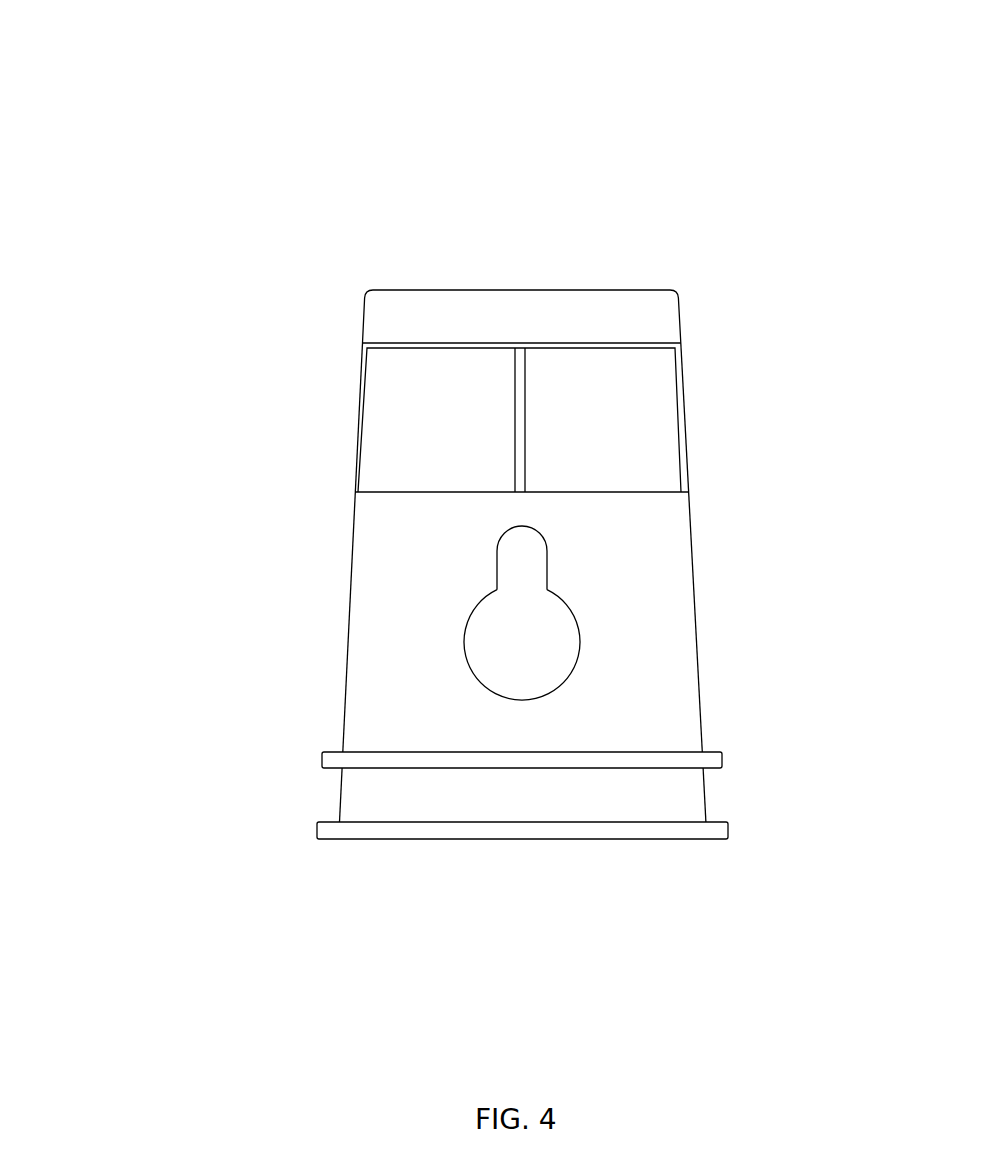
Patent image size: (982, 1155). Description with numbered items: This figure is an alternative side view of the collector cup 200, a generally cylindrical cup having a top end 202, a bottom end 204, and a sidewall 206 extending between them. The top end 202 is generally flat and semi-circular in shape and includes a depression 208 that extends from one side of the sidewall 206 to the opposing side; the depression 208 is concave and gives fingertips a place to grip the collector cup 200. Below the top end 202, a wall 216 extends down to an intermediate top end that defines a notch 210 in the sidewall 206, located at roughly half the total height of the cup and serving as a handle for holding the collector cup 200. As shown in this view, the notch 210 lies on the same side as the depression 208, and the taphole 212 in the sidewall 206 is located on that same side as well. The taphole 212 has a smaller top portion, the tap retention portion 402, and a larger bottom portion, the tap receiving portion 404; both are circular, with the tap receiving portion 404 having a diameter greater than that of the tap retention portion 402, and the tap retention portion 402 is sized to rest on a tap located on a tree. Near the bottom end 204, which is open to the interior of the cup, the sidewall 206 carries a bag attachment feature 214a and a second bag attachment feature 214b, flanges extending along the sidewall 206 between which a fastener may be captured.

The collector cup 200 is at (130, 52).
The top end 202 is at (403, 298).
The bottom end 204 is at (443, 837).
The sidewall 206 is at (415, 611).
The depression 208 is at (558, 320).
The notch 210 is at (575, 493).
The taphole 212 is at (520, 669).
The bag attachment feature 214a is at (647, 755).
The second bag attachment feature 214b is at (598, 832).
The wall 216 is at (638, 370).
The tap retention portion 402 is at (525, 547).
The tap receiving portion 404 is at (541, 637).